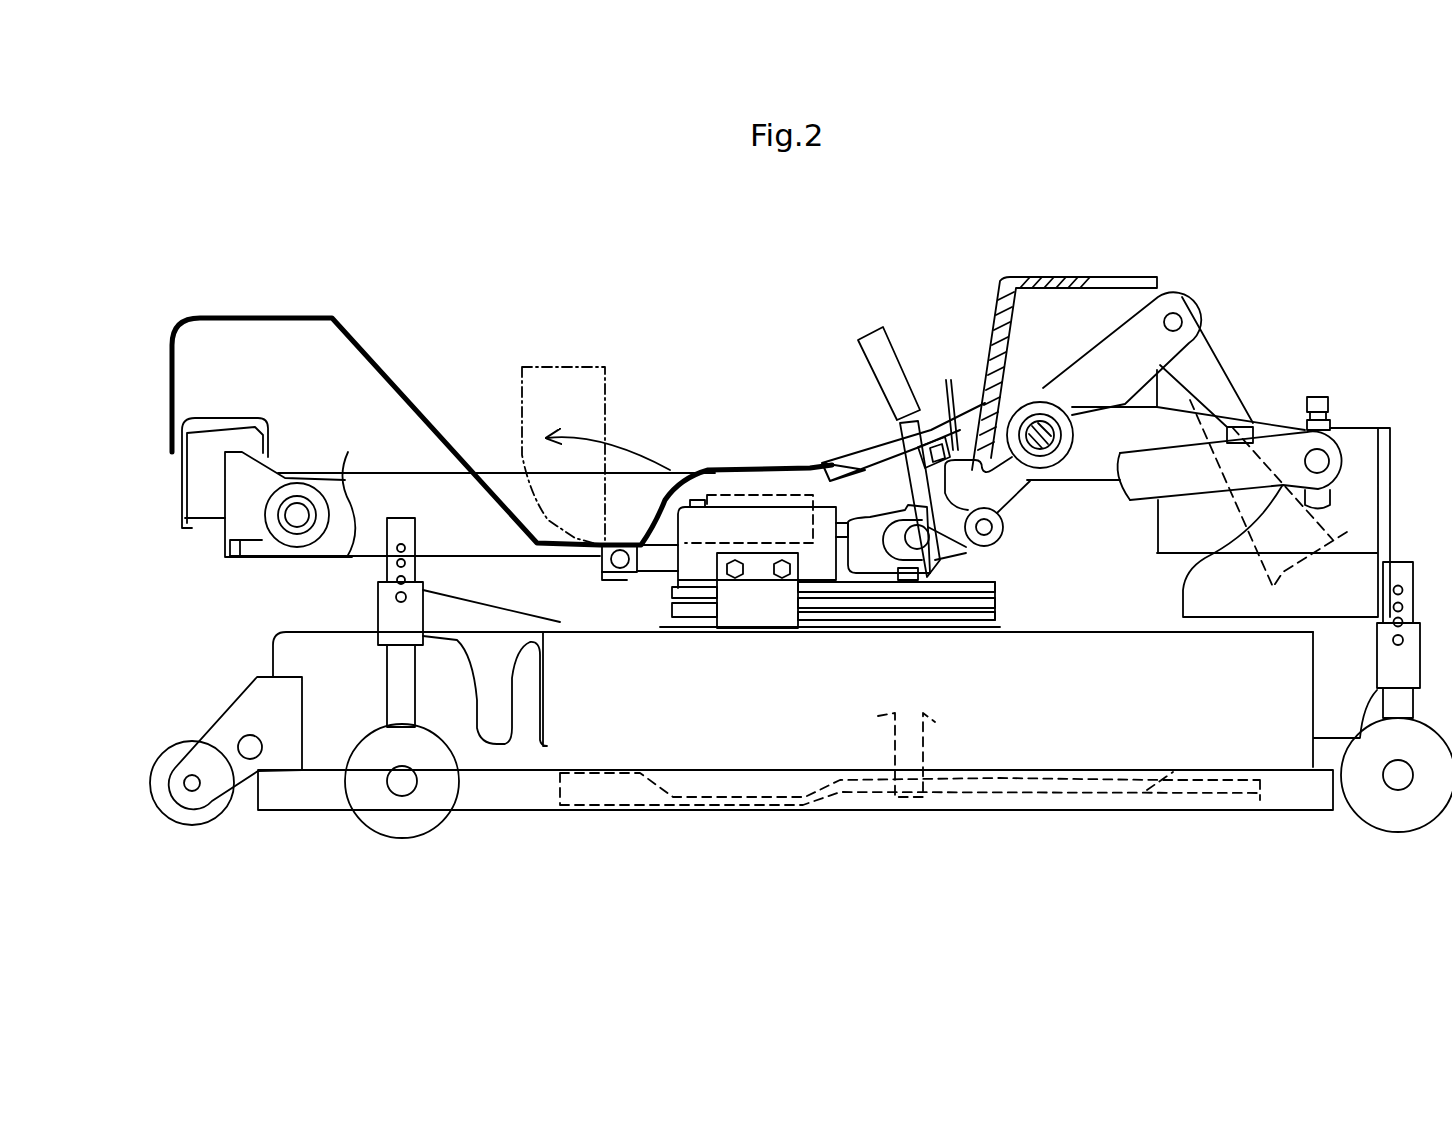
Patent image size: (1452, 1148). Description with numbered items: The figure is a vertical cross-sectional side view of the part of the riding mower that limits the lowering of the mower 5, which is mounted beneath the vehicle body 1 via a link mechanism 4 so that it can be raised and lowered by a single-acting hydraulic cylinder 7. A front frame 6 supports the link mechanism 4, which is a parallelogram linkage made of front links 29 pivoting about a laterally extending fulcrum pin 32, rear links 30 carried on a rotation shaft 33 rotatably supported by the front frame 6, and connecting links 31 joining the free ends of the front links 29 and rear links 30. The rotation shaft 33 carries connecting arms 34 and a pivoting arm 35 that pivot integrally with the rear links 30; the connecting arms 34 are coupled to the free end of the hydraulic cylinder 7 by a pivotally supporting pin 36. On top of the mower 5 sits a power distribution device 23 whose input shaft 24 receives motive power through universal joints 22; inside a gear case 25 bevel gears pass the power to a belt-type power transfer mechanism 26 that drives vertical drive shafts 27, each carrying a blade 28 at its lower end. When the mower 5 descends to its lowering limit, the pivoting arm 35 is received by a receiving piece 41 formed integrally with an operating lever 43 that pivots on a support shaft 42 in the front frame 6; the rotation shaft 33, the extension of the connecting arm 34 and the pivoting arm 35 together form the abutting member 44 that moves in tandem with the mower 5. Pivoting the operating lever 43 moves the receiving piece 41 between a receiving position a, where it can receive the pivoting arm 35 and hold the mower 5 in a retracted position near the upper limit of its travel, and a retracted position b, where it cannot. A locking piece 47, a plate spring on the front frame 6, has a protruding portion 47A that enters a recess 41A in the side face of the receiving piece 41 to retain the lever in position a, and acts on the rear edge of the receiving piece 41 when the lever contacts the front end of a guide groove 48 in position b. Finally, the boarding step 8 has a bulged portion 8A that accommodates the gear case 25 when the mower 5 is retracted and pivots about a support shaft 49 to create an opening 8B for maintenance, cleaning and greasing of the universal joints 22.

The vehicle body 1 is at (219, 275).
The link mechanism 4 is at (1337, 413).
The mower 5 is at (1220, 815).
The front frame 6 is at (290, 567).
The hydraulic cylinder 7 is at (1215, 385).
The boarding step 8 is at (373, 357).
The bulged portion 8A is at (517, 403).
The opening 8B is at (668, 540).
The universal joints 22 is at (880, 572).
The power distribution device 23 is at (733, 483).
The input shaft 24 is at (843, 552).
The gear case 25 is at (763, 497).
The belt-type power transfer mechanism 26 is at (950, 628).
The drive shafts 27 is at (893, 745).
The blade 28 is at (603, 790).
The front links 29 is at (328, 538).
The rear links 30 is at (1089, 481).
The connecting links 31 is at (1193, 480).
The fulcrum pin 32 is at (300, 510).
The rotation shaft 33 is at (1053, 427).
The connecting arms 34 is at (1130, 318).
The pivoting arm 35 is at (1010, 475).
The pivotally supporting pin 36 is at (1176, 308).
The receiving piece 41 is at (962, 433).
The recess 41A is at (873, 447).
The support shaft 42 is at (968, 532).
The operating lever 43 is at (893, 340).
The abutting member 44 is at (1053, 362).
The locking piece 47 is at (985, 530).
The protruding portion 47A is at (950, 420).
The guide groove 48 is at (883, 455).
The support shaft 49 is at (618, 563).
The receiving position a is at (877, 347).
The retracted position b is at (817, 397).